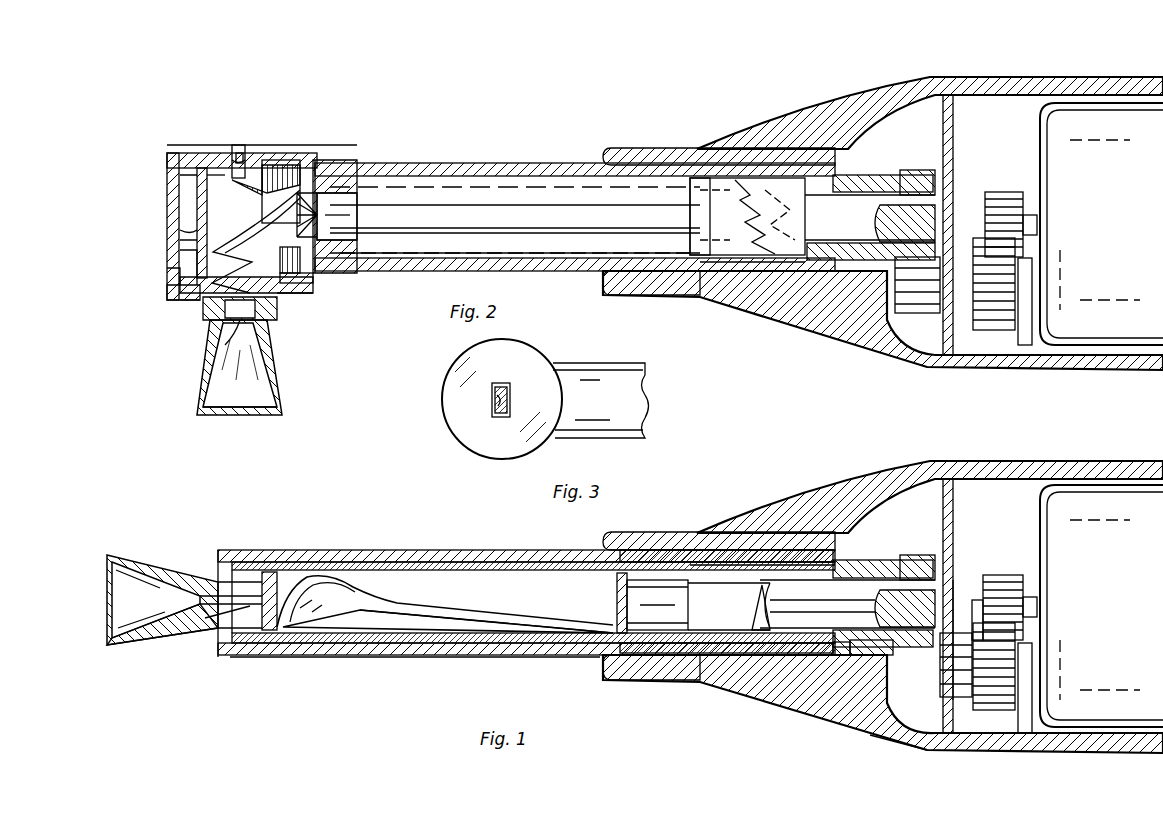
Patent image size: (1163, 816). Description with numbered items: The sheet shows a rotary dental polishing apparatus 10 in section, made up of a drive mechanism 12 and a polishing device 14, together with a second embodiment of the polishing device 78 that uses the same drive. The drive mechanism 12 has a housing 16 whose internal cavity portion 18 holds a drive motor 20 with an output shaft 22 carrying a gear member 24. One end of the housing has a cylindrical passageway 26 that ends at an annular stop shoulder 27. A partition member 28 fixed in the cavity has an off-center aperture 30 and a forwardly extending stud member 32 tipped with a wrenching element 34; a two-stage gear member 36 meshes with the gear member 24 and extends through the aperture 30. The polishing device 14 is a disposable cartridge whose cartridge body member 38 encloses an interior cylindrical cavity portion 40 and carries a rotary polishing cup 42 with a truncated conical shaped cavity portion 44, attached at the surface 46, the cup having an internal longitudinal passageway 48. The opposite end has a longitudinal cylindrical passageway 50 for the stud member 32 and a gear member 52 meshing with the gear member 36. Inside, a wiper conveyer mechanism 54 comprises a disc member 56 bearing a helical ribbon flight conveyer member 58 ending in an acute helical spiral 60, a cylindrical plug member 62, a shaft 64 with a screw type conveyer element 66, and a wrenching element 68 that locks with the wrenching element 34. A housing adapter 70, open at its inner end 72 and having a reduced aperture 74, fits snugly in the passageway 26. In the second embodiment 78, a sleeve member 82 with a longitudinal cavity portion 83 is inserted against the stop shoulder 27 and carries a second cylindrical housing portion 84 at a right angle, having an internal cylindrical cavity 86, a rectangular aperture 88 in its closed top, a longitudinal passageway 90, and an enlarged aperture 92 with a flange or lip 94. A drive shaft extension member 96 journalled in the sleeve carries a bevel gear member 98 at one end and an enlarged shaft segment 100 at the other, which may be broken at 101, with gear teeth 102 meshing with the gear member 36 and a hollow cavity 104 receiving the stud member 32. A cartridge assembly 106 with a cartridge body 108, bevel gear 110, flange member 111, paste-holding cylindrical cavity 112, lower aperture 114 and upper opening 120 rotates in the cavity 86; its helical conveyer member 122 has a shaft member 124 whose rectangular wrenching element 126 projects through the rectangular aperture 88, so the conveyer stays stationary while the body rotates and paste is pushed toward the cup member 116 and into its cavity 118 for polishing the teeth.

In FIG. 1, the rotary dental polishing apparatus 10 is at (325, 683).
In FIG. 1, the drive mechanism 12 is at (835, 470).
In FIG. 2, the drive mechanism 12 is at (855, 92).
In FIG. 1, the polishing device 14 is at (405, 528).
In FIG. 1, the housing 16 is at (893, 745).
In FIG. 1, the internal cavity portion 18 is at (1025, 479).
In FIG. 1, the drive motor 20 is at (1120, 485).
In FIG. 2, the drive motor 20 is at (1112, 103).
In FIG. 1, the output shaft 22 is at (1030, 597).
In FIG. 2, the output shaft 22 is at (1030, 215).
In FIG. 1, the gear member 24 is at (1000, 575).
In FIG. 2, the gear member 24 is at (1000, 192).
In FIG. 1, the cylindrical passageway 26 is at (768, 583).
In FIG. 1, the annular stop shoulder 27 is at (800, 560).
In FIG. 2, the annular stop shoulder 27 is at (800, 270).
In FIG. 1, the partition member 28 is at (945, 495).
In FIG. 1, the off-center aperture 30 is at (945, 705).
In FIG. 1, the stud member 32 is at (850, 595).
In FIG. 2, the stud member 32 is at (833, 180).
In FIG. 1, the wrenching element 34 is at (740, 600).
In FIG. 1, the two-stage gear member 36 is at (982, 712).
In FIG. 2, the two-stage gear member 36 is at (986, 332).
In FIG. 1, the cartridge body member 38 is at (332, 556).
In FIG. 1, the interior cylindrical cavity portion 40 is at (390, 575).
In FIG. 1, the rotary polishing cup 42 is at (160, 568).
In FIG. 1, the truncated conical shaped cavity portion 44 is at (145, 596).
In FIG. 1, the surface 46 is at (228, 585).
In FIG. 1, the internal longitudinal passageway 48 is at (160, 630).
In FIG. 1, the longitudinal cylindrical passageway 50 is at (705, 565).
In FIG. 2, the longitudinal cylindrical passageway 50 is at (665, 165).
In FIG. 1, the gear member 52 is at (962, 650).
In FIG. 2, the gear member 52 is at (945, 340).
In FIG. 1, the wiper conveyer mechanism 54 is at (505, 595).
In FIG. 1, the disc member 56 is at (615, 600).
In FIG. 1, the helical ribbon flight conveyer member 58 is at (460, 615).
In FIG. 1, the acute helical spiral 60 is at (270, 572).
In FIG. 1, the cylindrical plug member 62 is at (650, 598).
In FIG. 1, the shaft 64 is at (690, 560).
In FIG. 1, the screw type conveyer element 66 is at (705, 655).
In FIG. 1, the wrenching element 68 is at (845, 655).
In FIG. 1, the housing adapter 70 is at (265, 657).
In FIG. 1, the inner end 72 is at (840, 655).
In FIG. 1, the reduced aperture 74 is at (212, 618).
In FIG. 2, the polishing device 78 is at (293, 108).
In FIG. 2, the sleeve member 82 is at (540, 165).
In FIG. 3, the sleeve member 82 is at (598, 368).
In FIG. 2, the longitudinal cavity portion 83 is at (495, 190).
In FIG. 2, the second cylindrical housing portion 84 is at (180, 213).
In FIG. 3, the second cylindrical housing portion 84 is at (512, 455).
In FIG. 2, the internal cylindrical cavity 86 is at (185, 232).
In FIG. 3, the rectangular aperture 88 is at (496, 400).
In FIG. 2, the longitudinal passageway 90 is at (340, 200).
In FIG. 2, the enlarged aperture 92 is at (183, 292).
In FIG. 2, the flange or lip 94 is at (290, 295).
In FIG. 2, the drive shaft extension member 96 is at (590, 205).
In FIG. 2, the bevel gear member 98 is at (303, 195).
In FIG. 2, the enlarged shaft segment 100 is at (770, 190).
In FIG. 2, the break 101 is at (705, 180).
In FIG. 2, the gear teeth 102 is at (945, 150).
In FIG. 2, the hollow cavity 104 is at (890, 210).
In FIG. 2, the cartridge assembly 106 is at (190, 185).
In FIG. 2, the cartridge body 108 is at (215, 180).
In FIG. 2, the bevel gear 110 is at (190, 255).
In FIG. 2, the flange member 111 is at (172, 270).
In FIG. 2, the cylindrical cavity 112 is at (203, 175).
In FIG. 2, the aperture 114 is at (277, 318).
In FIG. 2, the cup member 116 is at (278, 350).
In FIG. 2, the cavity 118 is at (270, 390).
In FIG. 2, the opening 120 is at (232, 150).
In FIG. 2, the helical conveyer member 122 is at (300, 280).
In FIG. 2, the shaft member 124 is at (265, 170).
In FIG. 2, the rectangular wrenching element 126 is at (240, 150).
In FIG. 3, the rectangular wrenching element 126 is at (495, 385).